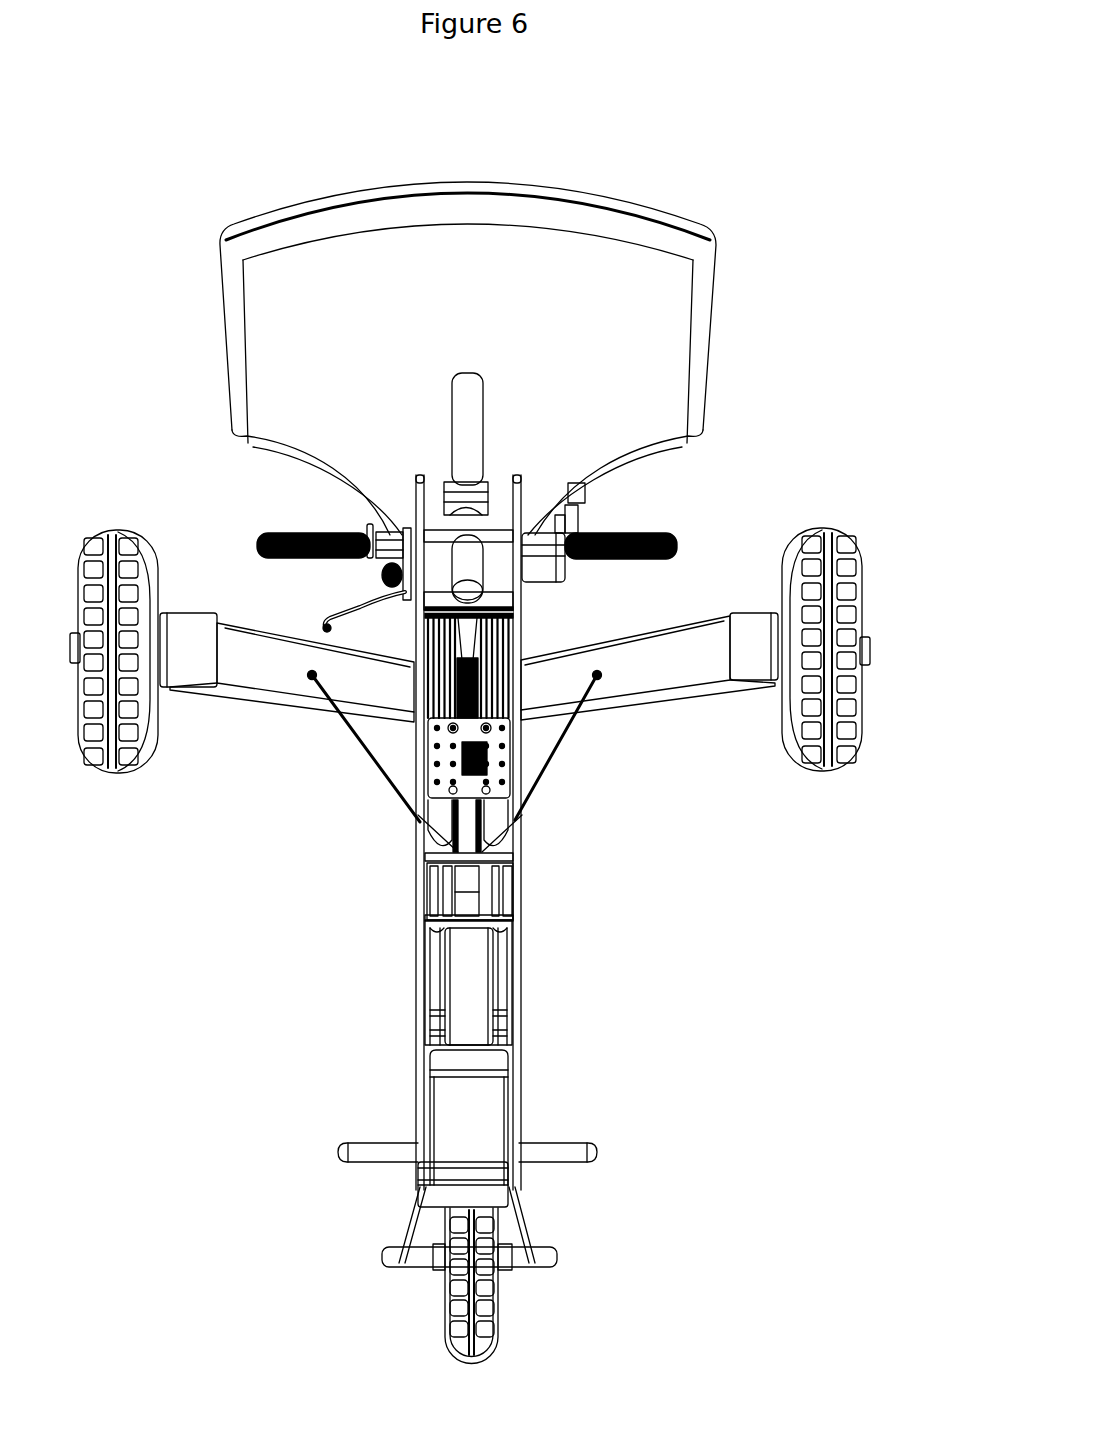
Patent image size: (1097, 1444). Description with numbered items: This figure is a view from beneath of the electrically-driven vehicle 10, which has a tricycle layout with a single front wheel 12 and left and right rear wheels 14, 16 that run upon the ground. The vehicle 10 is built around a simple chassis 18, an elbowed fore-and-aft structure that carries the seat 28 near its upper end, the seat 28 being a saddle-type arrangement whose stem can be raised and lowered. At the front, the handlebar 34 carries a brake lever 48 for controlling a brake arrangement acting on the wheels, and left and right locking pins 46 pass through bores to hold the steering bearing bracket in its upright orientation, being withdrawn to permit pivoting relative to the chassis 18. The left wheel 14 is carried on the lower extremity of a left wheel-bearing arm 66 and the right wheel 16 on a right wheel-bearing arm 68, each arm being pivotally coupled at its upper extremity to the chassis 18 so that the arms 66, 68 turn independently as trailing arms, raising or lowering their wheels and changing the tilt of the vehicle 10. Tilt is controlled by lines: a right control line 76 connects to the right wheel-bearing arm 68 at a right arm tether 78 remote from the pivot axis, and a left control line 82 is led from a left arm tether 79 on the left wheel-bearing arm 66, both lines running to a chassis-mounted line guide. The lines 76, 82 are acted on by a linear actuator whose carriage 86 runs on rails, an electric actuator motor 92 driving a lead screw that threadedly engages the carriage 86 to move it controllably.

The electrically-driven vehicle 10 is at (845, 890).
The front wheel 12 is at (493, 1350).
The left rear wheel 14 is at (135, 767).
The right rear wheel 16 is at (853, 728).
The chassis 18 is at (550, 942).
The seat 28 is at (710, 388).
The handlebar 34 is at (640, 530).
The locking pins 46 is at (356, 1148).
The brake lever 48 is at (333, 612).
The left wheel-bearing arm 66 is at (227, 703).
The right wheel-bearing arm 68 is at (653, 703).
The right control line 76 is at (533, 787).
The right arm tether 78 is at (600, 671).
The left arm tether 79 is at (308, 671).
The left control line 82 is at (388, 783).
The carriage 86 is at (422, 762).
The electric actuator motor 92 is at (493, 987).